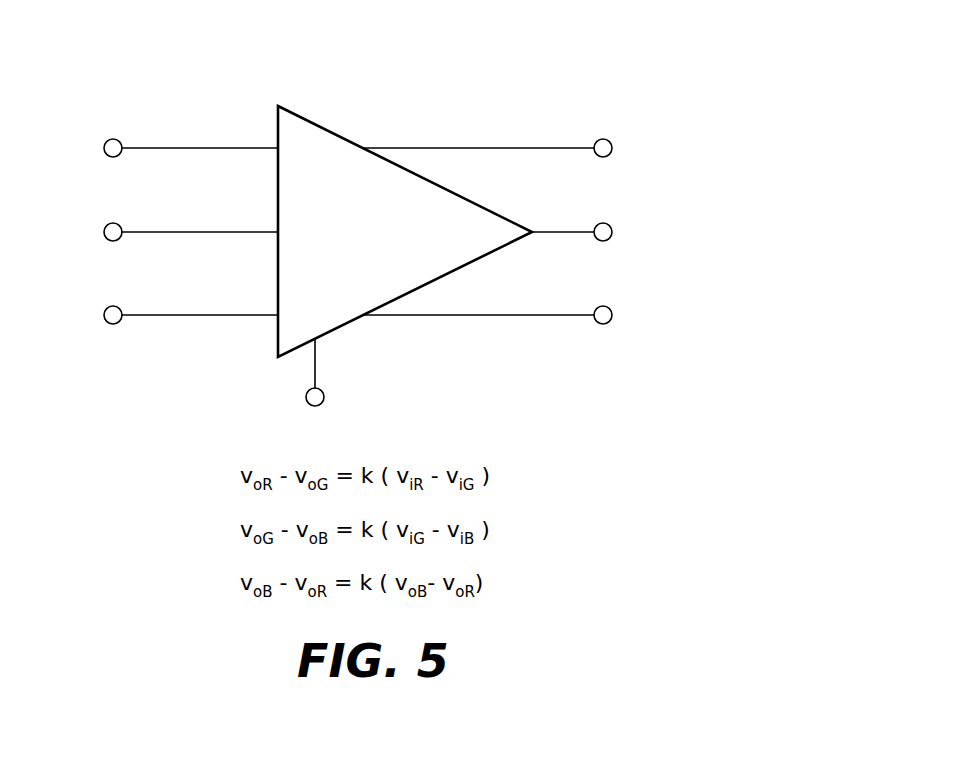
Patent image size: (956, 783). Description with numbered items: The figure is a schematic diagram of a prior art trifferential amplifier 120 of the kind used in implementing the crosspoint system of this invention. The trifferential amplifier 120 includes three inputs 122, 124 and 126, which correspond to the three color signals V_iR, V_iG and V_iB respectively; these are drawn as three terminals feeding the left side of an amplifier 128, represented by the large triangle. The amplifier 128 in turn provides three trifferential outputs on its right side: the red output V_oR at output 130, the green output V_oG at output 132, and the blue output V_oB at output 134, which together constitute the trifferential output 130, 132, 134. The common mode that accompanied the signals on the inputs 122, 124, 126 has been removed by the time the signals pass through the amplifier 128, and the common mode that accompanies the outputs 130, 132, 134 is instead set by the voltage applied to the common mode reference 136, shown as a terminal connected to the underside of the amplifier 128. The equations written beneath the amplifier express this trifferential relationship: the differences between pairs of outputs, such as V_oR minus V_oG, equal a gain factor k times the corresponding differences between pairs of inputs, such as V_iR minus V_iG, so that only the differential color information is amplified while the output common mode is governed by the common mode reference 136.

The trifferential amplifier 120 is at (362, 240).
The input 122 is at (183, 313).
The input 124 is at (183, 230).
The input 126 is at (183, 146).
The amplifier 128 is at (317, 155).
The trifferential output 130 is at (523, 314).
The trifferential output 132 is at (567, 232).
The trifferential output 134 is at (523, 147).
The common mode reference 136 is at (324, 397).